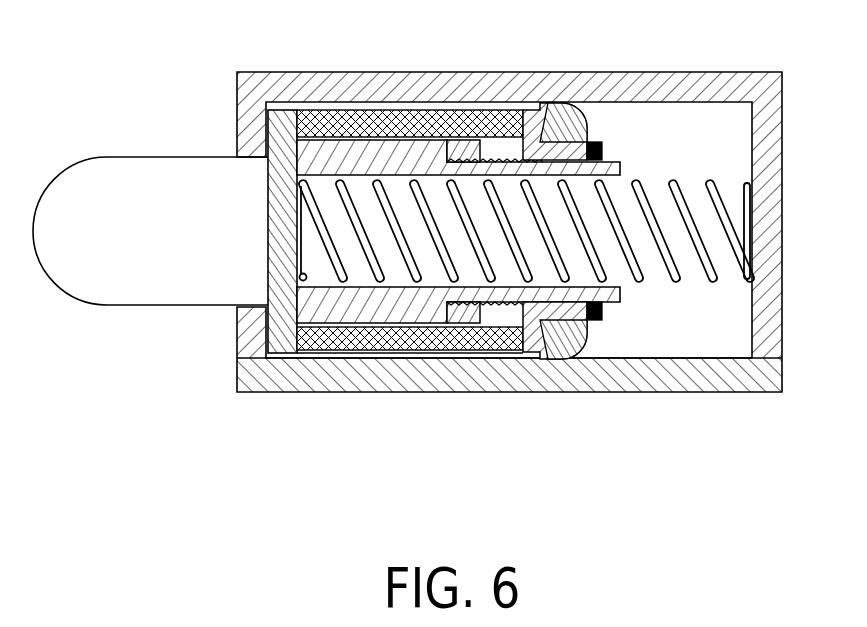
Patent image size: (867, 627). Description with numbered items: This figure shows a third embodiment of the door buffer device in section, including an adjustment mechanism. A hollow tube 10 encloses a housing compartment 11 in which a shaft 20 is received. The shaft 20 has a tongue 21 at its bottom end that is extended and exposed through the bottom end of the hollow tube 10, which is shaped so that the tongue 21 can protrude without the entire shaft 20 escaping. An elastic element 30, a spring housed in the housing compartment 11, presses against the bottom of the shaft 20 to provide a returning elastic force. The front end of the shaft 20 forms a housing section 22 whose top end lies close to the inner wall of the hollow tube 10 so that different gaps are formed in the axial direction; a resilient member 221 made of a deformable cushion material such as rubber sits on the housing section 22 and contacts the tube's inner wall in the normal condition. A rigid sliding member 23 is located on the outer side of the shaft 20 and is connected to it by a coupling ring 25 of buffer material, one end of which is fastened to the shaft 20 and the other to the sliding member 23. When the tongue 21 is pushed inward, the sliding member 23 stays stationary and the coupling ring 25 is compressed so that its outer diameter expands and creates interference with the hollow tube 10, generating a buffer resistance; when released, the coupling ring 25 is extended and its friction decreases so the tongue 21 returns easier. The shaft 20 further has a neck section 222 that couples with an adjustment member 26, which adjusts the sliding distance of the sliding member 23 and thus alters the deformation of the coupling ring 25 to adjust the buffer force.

The hollow tube 10 is at (298, 80).
The housing compartment 11 is at (674, 133).
The shaft 20 is at (267, 330).
The tongue 21 is at (132, 290).
The housing section 22 is at (388, 150).
The resilient member 221 is at (597, 100).
The neck section 222 is at (507, 158).
The sliding member 23 is at (530, 130).
The coupling ring 25 is at (350, 108).
The adjustment member 26 is at (465, 152).
The elastic element 30 is at (672, 282).